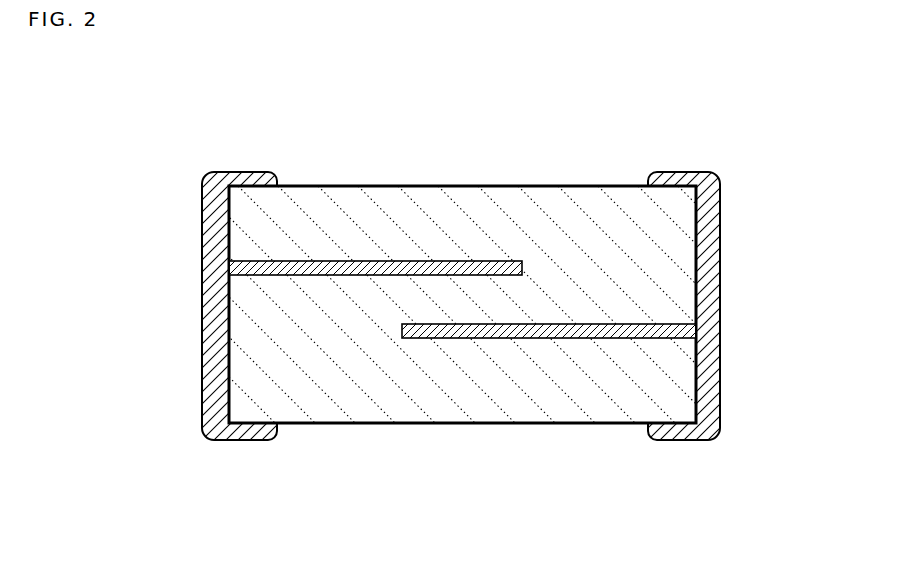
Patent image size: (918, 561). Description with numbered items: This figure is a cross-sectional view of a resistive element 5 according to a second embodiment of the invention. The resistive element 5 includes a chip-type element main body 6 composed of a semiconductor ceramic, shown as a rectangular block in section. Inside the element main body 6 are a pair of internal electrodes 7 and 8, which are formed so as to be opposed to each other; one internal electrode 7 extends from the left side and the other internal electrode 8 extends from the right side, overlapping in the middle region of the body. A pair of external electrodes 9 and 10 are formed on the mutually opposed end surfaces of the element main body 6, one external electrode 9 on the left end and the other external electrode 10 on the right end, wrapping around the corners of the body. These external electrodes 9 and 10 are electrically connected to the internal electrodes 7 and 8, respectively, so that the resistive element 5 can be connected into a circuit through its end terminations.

The resistive element 5 is at (338, 88).
The element main body 6 is at (605, 184).
The internal electrode 7 is at (327, 262).
The internal electrode 8 is at (525, 339).
The external electrode 9 is at (203, 320).
The external electrode 10 is at (720, 298).